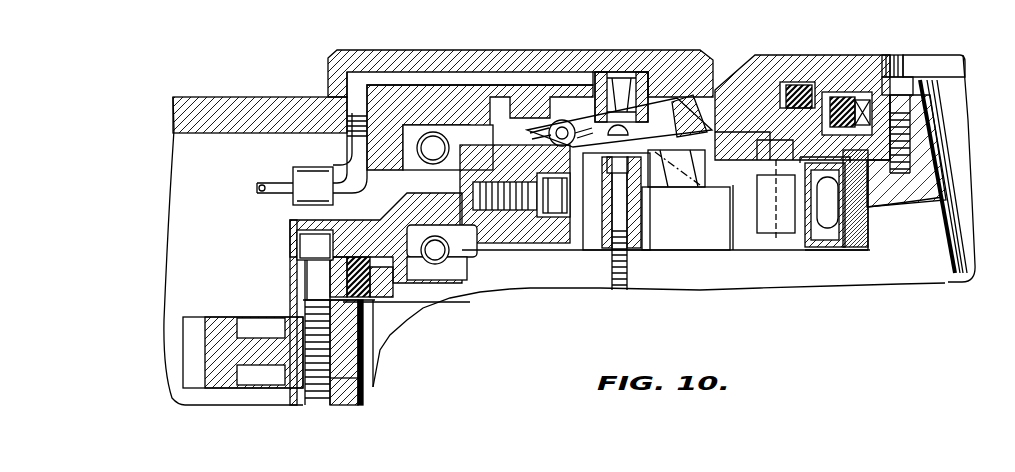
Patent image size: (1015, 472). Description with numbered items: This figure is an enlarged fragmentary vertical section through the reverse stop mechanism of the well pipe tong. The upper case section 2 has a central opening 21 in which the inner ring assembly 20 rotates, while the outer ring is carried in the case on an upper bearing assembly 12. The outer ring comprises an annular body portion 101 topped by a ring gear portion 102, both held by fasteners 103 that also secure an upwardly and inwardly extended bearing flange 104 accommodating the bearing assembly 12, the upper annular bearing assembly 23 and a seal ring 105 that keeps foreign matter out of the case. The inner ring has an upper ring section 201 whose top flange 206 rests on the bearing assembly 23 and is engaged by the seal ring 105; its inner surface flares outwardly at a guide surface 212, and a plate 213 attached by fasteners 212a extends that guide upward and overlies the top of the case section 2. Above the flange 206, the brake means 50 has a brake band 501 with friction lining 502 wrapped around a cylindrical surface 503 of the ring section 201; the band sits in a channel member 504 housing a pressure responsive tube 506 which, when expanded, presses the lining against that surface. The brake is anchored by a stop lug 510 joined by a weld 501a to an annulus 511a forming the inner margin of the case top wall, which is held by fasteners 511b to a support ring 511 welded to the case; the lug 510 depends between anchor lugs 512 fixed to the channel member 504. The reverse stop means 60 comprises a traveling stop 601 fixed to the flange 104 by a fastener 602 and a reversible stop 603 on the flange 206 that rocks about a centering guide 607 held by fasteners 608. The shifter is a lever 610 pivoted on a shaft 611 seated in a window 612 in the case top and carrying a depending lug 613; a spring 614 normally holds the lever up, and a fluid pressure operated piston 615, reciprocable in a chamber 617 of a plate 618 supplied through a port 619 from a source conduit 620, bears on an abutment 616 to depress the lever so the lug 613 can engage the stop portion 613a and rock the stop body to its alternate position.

The upper case section 2 is at (233, 102).
The upper bearing assembly 12 is at (434, 148).
The inner ring assembly 20 is at (541, 284).
The central opening 21 is at (835, 98).
The upper annular bearing assembly 23 is at (437, 266).
The brake means 50 is at (828, 232).
The reverse stop means 60 is at (660, 250).
The annular body portion 101 is at (345, 397).
The ring gear portion 102 is at (217, 325).
The fasteners 103 is at (315, 270).
The annular bearing plate or flange 104 is at (360, 227).
The seal ring 105 is at (355, 287).
The upper ring section 201 is at (922, 230).
The top flange or plate 206 is at (628, 290).
The guide surface 212 is at (930, 115).
The fasteners 212a is at (902, 85).
The plate 213 is at (868, 53).
The brake band 501 is at (845, 217).
The weld 501a is at (690, 248).
The friction lining material 502 is at (862, 242).
The cylindrical surface 503 is at (870, 200).
The channel member 504 is at (792, 290).
The pressure responsive tube 506 is at (808, 250).
The stop lug 510 is at (763, 250).
The support ring 511 is at (720, 137).
The annulus 511a is at (782, 92).
The fasteners 511b is at (762, 65).
The anchor lugs 512 is at (786, 235).
The traveling stop 601 is at (520, 235).
The fastener 602 is at (560, 225).
The reversible stop 603 is at (696, 270).
The centering guide 607 is at (594, 292).
The fasteners 608 is at (628, 250).
The lever 610 is at (577, 125).
The shaft 611 is at (562, 120).
The window 612 is at (497, 105).
The lug 613 is at (674, 104).
The stop portion 613a is at (686, 218).
The spring 614 is at (555, 122).
The fluid pressure operated piston 615 is at (622, 75).
The abutment 616 is at (623, 124).
The chamber 617 is at (585, 112).
The plate 618 is at (367, 39).
The pressure fluid port 619 is at (402, 82).
The source conduit 620 is at (272, 171).